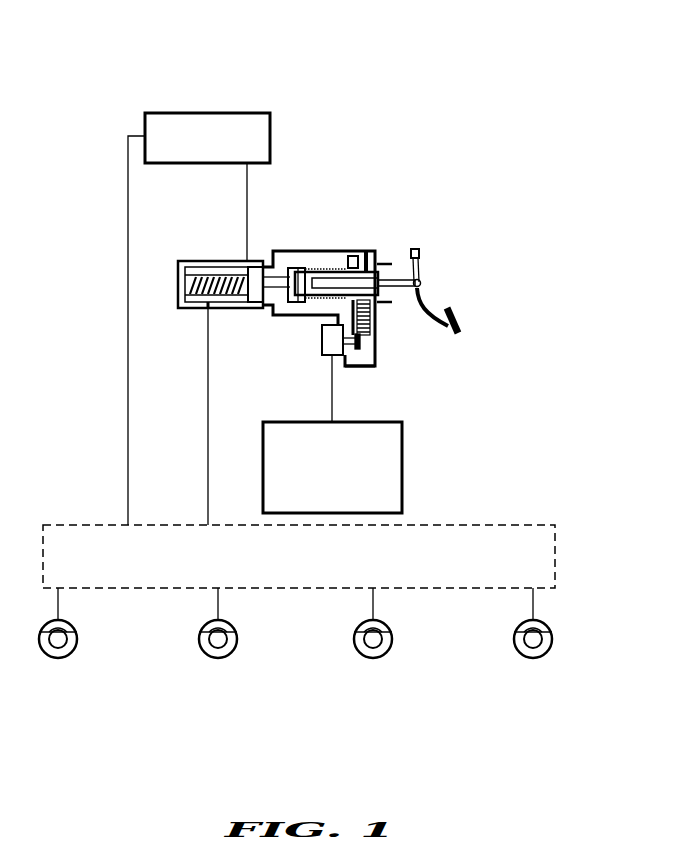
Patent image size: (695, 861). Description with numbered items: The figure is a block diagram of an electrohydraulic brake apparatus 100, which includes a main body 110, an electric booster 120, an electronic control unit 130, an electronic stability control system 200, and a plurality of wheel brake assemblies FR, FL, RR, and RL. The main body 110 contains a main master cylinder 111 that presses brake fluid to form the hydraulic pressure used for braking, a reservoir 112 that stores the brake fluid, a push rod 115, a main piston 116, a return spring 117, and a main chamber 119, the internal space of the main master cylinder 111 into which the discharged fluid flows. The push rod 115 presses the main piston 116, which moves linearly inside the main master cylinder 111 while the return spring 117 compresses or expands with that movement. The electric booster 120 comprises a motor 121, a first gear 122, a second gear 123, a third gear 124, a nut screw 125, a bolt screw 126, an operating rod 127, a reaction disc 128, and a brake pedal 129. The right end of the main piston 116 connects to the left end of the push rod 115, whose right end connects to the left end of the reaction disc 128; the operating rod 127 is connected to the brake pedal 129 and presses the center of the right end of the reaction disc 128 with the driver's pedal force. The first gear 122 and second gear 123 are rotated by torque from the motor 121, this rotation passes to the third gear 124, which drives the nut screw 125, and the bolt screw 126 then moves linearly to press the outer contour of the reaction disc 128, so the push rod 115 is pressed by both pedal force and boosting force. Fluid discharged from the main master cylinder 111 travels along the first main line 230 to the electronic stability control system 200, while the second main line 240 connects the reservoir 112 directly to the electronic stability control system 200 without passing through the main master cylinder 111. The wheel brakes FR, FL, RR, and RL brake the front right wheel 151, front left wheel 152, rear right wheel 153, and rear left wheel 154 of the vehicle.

The electrohydraulic brake apparatus 100 is at (97, 38).
The main body 110 is at (190, 262).
The main master cylinder 111 is at (188, 309).
The reservoir 112 is at (228, 113).
The push rod 115 is at (268, 300).
The main piston 116 is at (255, 262).
The return spring 117 is at (212, 301).
The main chamber 119 is at (222, 262).
The electric booster 120 is at (393, 256).
The motor 121 is at (322, 348).
The first gear 122 is at (360, 347).
The second gear 123 is at (372, 322).
The third gear 124 is at (375, 256).
The nut screw 125 is at (354, 256).
The bolt screw 126 is at (338, 271).
The operating rod 127 is at (312, 290).
The reaction disc 128 is at (296, 268).
The brake pedal 129 is at (432, 305).
The electronic control unit 130 is at (402, 444).
The front right wheel 151 is at (533, 658).
The front left wheel 152 is at (373, 658).
The rear right wheel 153 is at (218, 658).
The rear left wheel 154 is at (58, 658).
The electronic stability control system 200 is at (78, 523).
The first main line 230 is at (208, 428).
The second main line 240 is at (128, 352).